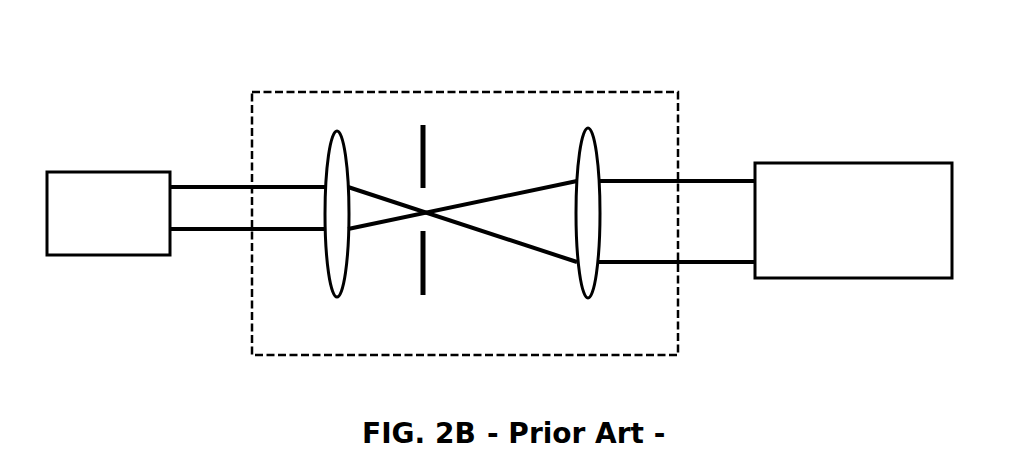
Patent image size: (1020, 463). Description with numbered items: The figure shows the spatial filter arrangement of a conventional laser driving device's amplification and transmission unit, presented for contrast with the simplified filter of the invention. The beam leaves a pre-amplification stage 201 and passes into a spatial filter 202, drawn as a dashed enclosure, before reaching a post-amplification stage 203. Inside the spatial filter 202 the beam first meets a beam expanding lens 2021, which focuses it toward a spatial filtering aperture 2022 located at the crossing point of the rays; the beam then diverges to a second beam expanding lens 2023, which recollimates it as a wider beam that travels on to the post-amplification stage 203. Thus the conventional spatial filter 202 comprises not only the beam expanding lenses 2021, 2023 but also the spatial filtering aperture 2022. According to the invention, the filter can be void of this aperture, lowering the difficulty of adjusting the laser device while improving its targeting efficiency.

The pre-amplification stage 201 is at (108, 213).
The spatial filter 202 is at (483, 209).
The post-amplification stage 203 is at (853, 220).
The beam expanding lens 2021 is at (340, 233).
The spatial filtering aperture 2022 is at (435, 230).
The beam expanding lens 2023 is at (588, 232).